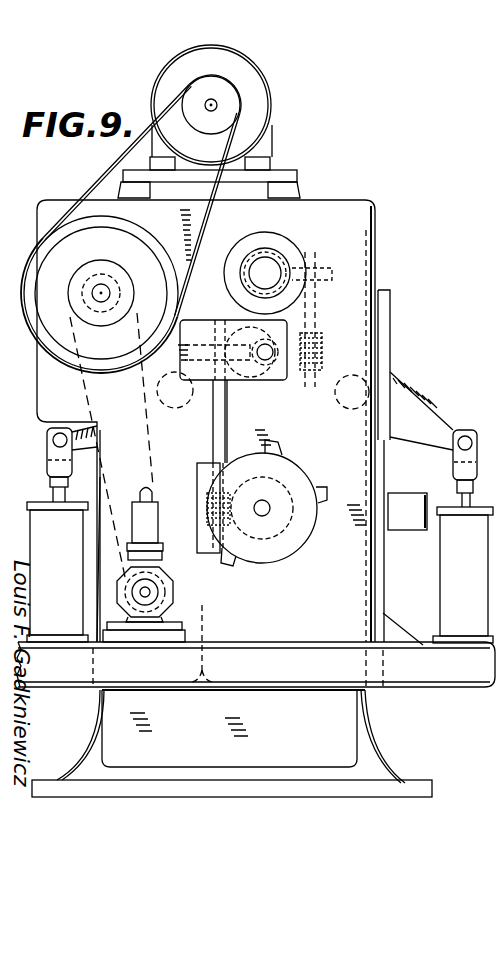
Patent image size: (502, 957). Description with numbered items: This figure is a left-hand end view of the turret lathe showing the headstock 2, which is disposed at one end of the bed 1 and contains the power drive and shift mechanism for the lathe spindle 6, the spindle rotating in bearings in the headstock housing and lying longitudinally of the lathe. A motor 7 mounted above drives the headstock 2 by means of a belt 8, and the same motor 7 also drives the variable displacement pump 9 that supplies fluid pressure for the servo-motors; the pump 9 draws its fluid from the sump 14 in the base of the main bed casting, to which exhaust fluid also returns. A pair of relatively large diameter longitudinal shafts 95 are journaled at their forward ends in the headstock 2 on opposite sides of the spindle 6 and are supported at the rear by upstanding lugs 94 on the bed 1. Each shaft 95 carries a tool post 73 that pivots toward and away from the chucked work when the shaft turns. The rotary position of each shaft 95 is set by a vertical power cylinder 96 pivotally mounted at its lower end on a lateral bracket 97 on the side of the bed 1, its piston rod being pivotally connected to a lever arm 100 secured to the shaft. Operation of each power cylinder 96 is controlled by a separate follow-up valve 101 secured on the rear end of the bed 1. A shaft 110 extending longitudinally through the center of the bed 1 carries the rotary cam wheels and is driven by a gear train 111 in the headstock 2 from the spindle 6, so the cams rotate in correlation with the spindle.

The bed 1 is at (100, 477).
The headstock 2 is at (378, 233).
The lathe spindle 6 is at (258, 262).
The motor 7 is at (270, 92).
The belt 8 is at (102, 178).
The variable displacement pump 9 is at (175, 592).
The sump 14 is at (343, 668).
The tool post 73 is at (391, 318).
The upstanding lugs 94 is at (390, 460).
The longitudinal shafts 95 is at (152, 396).
The vertical power cylinder 96 is at (434, 571).
The lateral bracket 97 is at (398, 628).
The lever arm 100 is at (47, 438).
The follow-up valve 101 is at (414, 494).
The shaft 110 is at (267, 512).
The gear train 111 is at (312, 335).